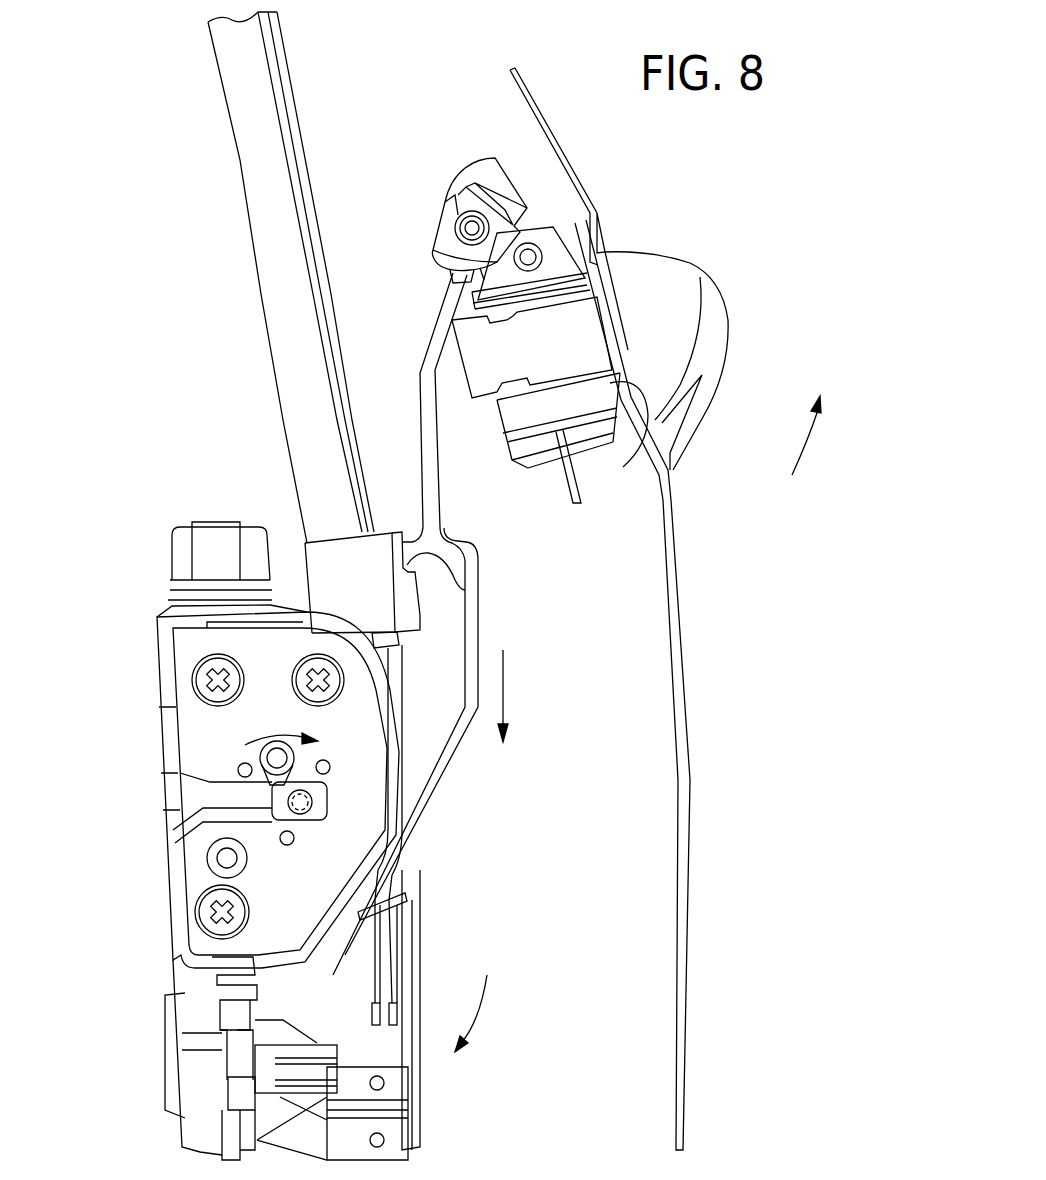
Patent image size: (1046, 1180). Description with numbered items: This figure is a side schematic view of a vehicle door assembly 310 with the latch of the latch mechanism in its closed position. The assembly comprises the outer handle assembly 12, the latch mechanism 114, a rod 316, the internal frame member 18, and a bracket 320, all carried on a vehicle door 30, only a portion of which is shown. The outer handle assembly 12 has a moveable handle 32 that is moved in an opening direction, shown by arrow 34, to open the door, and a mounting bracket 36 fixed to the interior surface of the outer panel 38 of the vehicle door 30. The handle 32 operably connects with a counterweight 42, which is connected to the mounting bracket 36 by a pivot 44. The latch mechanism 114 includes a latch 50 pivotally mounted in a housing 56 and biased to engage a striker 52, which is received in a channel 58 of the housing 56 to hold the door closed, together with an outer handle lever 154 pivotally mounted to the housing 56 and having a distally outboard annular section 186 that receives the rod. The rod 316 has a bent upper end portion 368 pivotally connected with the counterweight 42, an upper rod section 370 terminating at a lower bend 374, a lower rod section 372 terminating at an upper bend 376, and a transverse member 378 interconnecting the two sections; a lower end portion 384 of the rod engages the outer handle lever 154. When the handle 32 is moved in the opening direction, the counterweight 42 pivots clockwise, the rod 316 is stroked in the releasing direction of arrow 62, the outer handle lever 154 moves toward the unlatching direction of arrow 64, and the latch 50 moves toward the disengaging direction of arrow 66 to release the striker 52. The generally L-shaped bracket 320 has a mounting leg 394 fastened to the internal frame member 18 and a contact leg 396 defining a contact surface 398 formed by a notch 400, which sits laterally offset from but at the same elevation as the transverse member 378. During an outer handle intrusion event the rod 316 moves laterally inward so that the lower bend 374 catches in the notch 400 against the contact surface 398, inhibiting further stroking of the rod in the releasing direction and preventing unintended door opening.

The outer handle assembly 12 is at (742, 334).
The internal frame member 18 is at (280, 292).
The vehicle door 30 is at (712, 853).
The handle 32 is at (710, 395).
The opening direction arrow 34 is at (812, 452).
The mounting bracket 36 is at (645, 380).
The outer panel 38 is at (688, 780).
The counterweight 42 is at (478, 180).
The pivot 44 is at (528, 250).
The latch 50 is at (273, 798).
The striker 52 is at (312, 804).
The housing 56 is at (168, 738).
The channel 58 is at (175, 815).
The releasing direction arrow 62 is at (505, 675).
The unlatching direction arrow 64 is at (490, 1020).
The disengaging direction arrow 66 is at (277, 725).
The latch mechanism 114 is at (152, 669).
The outer handle lever 154 is at (402, 915).
The annular section 186 is at (400, 897).
The vehicle door assembly 310 is at (186, 401).
The rod 316 is at (498, 628).
The bracket 320 is at (380, 532).
The bent upper end portion 368 is at (468, 228).
The upper rod section 370 is at (426, 408).
The lower rod section 372 is at (455, 760).
The lower bend 374 is at (446, 528).
The upper bend 376 is at (479, 550).
The transverse member 378 is at (466, 541).
The lower end portion 384 is at (400, 862).
The mounting leg 394 is at (313, 537).
The contact leg 396 is at (413, 622).
The contact surface 398 is at (424, 520).
The notch 400 is at (465, 590).